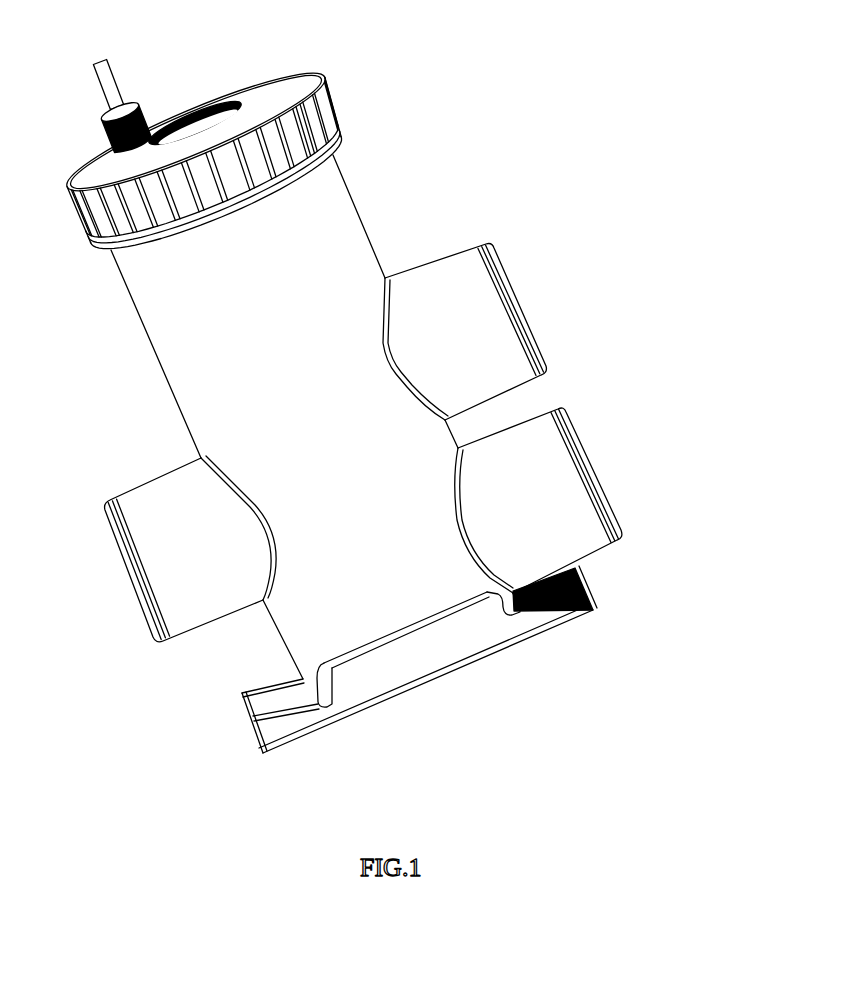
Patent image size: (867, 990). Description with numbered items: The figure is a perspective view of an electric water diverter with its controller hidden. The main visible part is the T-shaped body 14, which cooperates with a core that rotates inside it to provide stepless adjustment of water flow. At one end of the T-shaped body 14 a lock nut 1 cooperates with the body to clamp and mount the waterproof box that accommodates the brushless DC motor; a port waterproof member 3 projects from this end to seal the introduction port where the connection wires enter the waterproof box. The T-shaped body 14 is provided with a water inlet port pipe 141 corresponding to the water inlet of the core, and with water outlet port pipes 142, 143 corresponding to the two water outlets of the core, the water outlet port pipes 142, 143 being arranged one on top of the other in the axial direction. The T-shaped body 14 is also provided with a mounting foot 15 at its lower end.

The lock nut 1 is at (312, 130).
The port waterproof member 3 is at (143, 115).
The T-shaped body 14 is at (343, 312).
The water inlet port pipe 141 is at (163, 580).
The water outlet port pipe 142 is at (483, 343).
The water outlet port pipe 143 is at (553, 537).
The mounting foot 15 is at (421, 658).